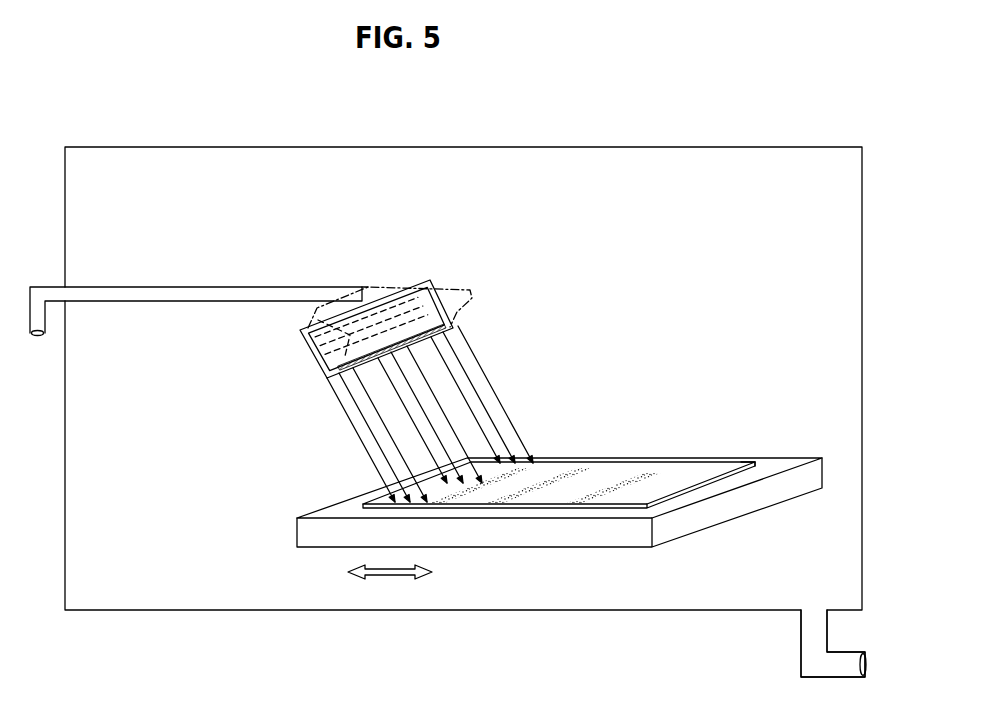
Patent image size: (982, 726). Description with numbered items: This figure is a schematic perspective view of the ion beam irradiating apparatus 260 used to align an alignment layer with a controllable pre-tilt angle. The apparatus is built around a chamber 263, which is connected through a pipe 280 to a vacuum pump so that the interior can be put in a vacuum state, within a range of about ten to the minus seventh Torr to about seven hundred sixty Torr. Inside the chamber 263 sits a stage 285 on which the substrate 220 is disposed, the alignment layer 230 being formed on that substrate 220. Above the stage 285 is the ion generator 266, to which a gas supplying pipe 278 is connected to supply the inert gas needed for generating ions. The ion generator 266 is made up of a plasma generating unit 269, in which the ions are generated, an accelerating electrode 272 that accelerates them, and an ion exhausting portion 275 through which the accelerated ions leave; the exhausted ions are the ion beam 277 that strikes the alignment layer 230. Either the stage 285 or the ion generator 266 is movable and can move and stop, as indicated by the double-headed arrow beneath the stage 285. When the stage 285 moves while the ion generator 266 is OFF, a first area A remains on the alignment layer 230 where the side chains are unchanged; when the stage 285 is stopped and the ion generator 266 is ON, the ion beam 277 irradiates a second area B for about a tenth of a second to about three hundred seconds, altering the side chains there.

The ion beam irradiating apparatus 260 is at (491, 366).
The chamber 263 is at (847, 253).
The gas supplying pipe 278 is at (168, 292).
The pipe 280 is at (810, 642).
The ion generator 266 is at (354, 333).
The plasma generating unit 269 is at (306, 352).
The accelerating electrode 272 is at (320, 372).
The ion exhausting portion 275 is at (371, 366).
The ion beam 277 is at (476, 352).
The alignment layer 230 is at (605, 454).
The substrate 220 is at (758, 463).
The stage 285 is at (575, 528).
The first area A is at (608, 474).
The second area B is at (577, 470).